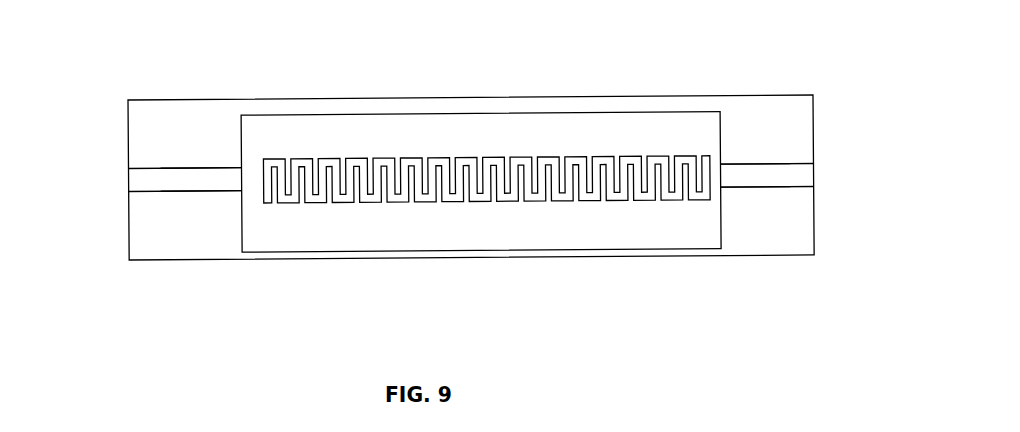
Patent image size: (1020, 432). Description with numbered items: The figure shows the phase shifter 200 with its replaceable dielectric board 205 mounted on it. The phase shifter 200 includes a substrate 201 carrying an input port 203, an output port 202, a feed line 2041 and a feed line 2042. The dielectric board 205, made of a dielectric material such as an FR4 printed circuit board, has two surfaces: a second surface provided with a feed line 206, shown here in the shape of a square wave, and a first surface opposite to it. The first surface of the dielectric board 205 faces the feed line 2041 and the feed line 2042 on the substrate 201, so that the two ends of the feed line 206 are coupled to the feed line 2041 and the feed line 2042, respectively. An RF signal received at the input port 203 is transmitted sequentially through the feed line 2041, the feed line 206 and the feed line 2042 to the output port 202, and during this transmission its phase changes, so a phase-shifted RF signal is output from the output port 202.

The phase shifter 200 is at (75, 84).
The substrate 201 is at (812, 107).
The output port 202 is at (812, 178).
The input port 203 is at (128, 180).
The feed line 2041 is at (222, 191).
The feed line 2042 is at (730, 180).
The replaceable dielectric board 205 is at (273, 115).
The feed line 206 is at (552, 158).